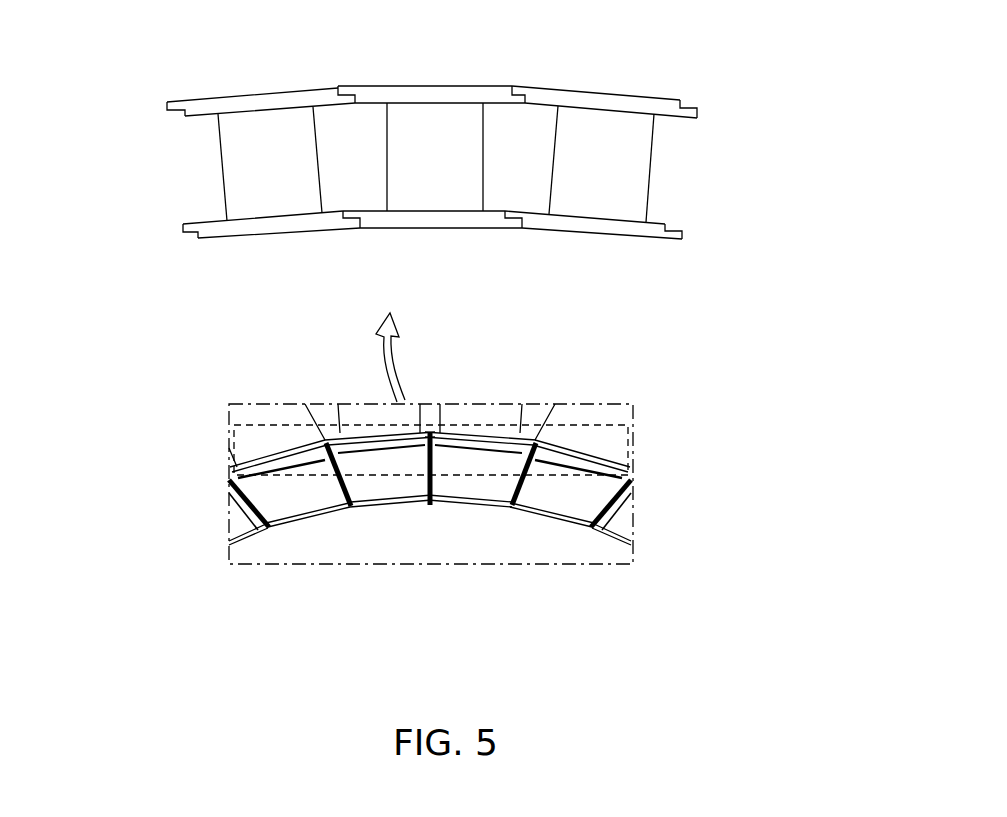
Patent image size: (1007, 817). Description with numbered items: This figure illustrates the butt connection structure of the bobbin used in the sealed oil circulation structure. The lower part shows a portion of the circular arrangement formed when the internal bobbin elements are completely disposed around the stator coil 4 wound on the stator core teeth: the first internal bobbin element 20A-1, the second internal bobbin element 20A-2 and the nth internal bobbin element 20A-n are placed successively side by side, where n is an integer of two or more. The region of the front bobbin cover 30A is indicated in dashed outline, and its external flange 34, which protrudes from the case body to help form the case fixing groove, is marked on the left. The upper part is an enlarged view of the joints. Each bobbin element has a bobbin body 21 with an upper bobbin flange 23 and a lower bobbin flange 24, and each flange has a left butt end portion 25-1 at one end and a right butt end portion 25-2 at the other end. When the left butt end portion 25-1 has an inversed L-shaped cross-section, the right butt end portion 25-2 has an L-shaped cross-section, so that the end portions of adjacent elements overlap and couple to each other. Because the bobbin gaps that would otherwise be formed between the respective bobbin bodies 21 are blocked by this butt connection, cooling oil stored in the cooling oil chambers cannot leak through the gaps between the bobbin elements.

The stator coil 4 is at (246, 434).
The bobbin body 21 is at (465, 157).
The upper bobbin flange 23 is at (428, 92).
The lower bobbin flange 24 is at (432, 220).
The left butt end portion 25-1 is at (345, 94).
The right butt end portion 25-2 is at (353, 95).
The front bobbin cover 30A is at (585, 424).
The external flange 34 is at (296, 508).
The nth internal bobbin element 20A-n is at (380, 440).
The first internal bobbin element 20A-1 is at (478, 433).
The second internal bobbin element 20A-2 is at (585, 510).